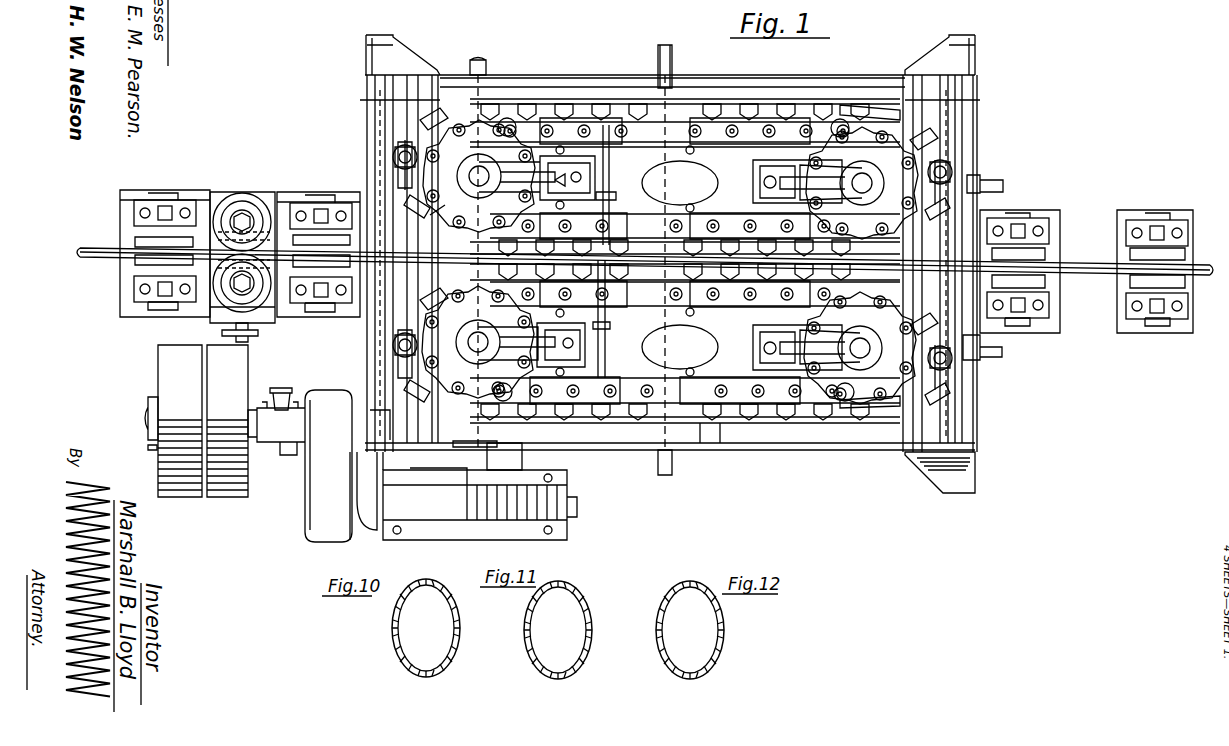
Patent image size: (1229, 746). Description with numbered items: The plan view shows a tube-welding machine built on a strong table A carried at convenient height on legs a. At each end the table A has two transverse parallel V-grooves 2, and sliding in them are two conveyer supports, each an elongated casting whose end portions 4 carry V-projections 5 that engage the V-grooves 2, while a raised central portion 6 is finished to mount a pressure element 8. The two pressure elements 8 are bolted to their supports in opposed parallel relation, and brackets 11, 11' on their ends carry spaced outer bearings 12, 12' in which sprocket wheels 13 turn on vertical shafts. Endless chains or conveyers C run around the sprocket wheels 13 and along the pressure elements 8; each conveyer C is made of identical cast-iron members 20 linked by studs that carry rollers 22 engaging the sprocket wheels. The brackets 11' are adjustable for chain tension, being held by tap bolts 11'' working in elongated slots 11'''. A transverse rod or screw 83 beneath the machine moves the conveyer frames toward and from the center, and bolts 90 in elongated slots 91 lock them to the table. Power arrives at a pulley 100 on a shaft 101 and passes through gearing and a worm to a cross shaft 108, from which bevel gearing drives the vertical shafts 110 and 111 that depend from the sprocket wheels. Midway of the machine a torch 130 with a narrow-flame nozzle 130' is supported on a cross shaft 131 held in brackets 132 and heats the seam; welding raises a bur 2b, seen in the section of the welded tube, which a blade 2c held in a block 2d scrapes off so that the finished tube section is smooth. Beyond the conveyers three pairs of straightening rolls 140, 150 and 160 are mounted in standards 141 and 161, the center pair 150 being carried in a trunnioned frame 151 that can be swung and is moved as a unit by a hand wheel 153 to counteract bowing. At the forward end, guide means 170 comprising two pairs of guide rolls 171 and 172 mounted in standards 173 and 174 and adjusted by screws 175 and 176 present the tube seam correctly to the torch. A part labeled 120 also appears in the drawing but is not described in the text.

In FIG. 1, the end portions 4 is at (472, 41).
In FIG. 1, the V-projections 5 is at (671, 25).
In FIG. 1, the central portion 6 is at (68, 230).
In FIG. 1, the pressure elements 8 is at (748, 88).
In FIG. 1, the brackets 11 is at (670, 261).
In FIG. 1, the adjustable sprocket-carrying brackets 11' is at (743, 246).
In FIG. 1, the tap bolts 11'' is at (737, 260).
In FIG. 1, the elongated slots 11''' is at (733, 276).
In FIG. 1, the outer bearing 12 is at (670, 262).
In FIG. 1, the outer bearing 12' is at (870, 377).
In FIG. 1, the sprocket wheels 13 is at (657, 234).
In FIG. 1, the conveyer members 20 is at (615, 100).
In FIG. 1, the rollers 22 is at (545, 110).
In FIG. 1, the transverse rod 83 is at (680, 90).
In FIG. 1, the bolts 90 is at (390, 352).
In FIG. 1, the elongated slots 91 is at (398, 140).
In FIG. 1, the power pulley 100 is at (236, 497).
In FIG. 1, the shaft 101 is at (146, 420).
In FIG. 1, the cross shaft 108 is at (471, 456).
In FIG. 1, the vertical shaft 110 is at (470, 175).
In FIG. 1, the vertical shaft 111 is at (468, 345).
In FIG. 1, the guide 120 is at (790, 113).
In FIG. 1, the torch 130 is at (624, 185).
In FIG. 1, the nozzle 130' is at (703, 312).
In FIG. 1, the cross shaft 131 is at (606, 370).
In FIG. 1, the bearings or brackets 132 is at (610, 178).
In FIG. 1, the rolls 140 is at (325, 198).
In FIG. 1, the standards 141 is at (295, 205).
In FIG. 1, the rolls 150 is at (246, 190).
In FIG. 1, the frame 151 is at (212, 200).
In FIG. 1, the hand wheel 153 is at (252, 338).
In FIG. 1, the rolls 160 is at (161, 181).
In FIG. 1, the standards 161 is at (140, 205).
In FIG. 1, the tube presenting means 170 is at (1114, 215).
In FIG. 1, the guide rolls 171 is at (1050, 262).
In FIG. 1, the guide rolls 172 is at (1115, 302).
In FIG. 1, the standards 173 is at (1055, 230).
In FIG. 1, the standards 174 is at (1170, 226).
In FIG. 1, the adjusting screws 175 is at (1020, 232).
In FIG. 1, the adjusting screws 176 is at (1170, 335).
In FIG. 1, the legs a is at (400, 55).
In FIG. 1, the table A is at (758, 450).
In FIG. 1, the endless chains or conveyers C is at (640, 88).
In FIG. 1, the V-grooves 2 is at (425, 92).
In FIG. 11, the raised seam or bur 2b is at (560, 584).
In FIG. 1, the tool or blade 2c is at (442, 232).
In FIG. 1, the block or bracket 2d is at (300, 322).